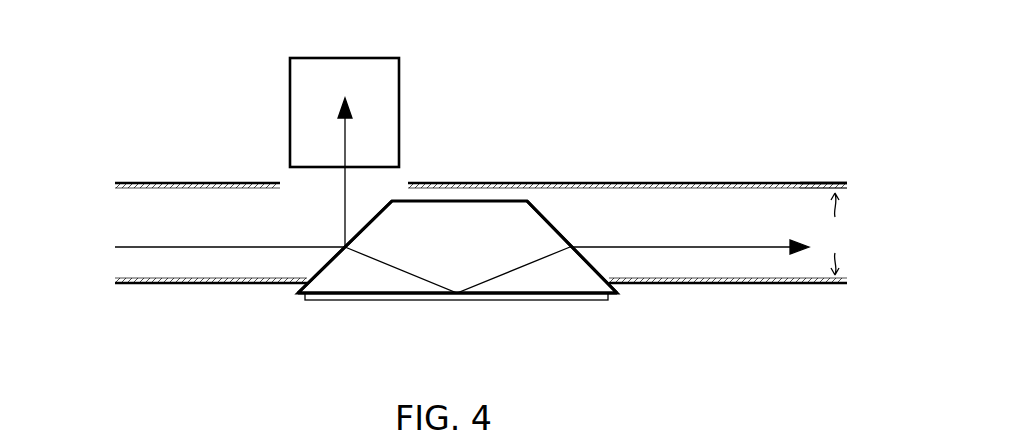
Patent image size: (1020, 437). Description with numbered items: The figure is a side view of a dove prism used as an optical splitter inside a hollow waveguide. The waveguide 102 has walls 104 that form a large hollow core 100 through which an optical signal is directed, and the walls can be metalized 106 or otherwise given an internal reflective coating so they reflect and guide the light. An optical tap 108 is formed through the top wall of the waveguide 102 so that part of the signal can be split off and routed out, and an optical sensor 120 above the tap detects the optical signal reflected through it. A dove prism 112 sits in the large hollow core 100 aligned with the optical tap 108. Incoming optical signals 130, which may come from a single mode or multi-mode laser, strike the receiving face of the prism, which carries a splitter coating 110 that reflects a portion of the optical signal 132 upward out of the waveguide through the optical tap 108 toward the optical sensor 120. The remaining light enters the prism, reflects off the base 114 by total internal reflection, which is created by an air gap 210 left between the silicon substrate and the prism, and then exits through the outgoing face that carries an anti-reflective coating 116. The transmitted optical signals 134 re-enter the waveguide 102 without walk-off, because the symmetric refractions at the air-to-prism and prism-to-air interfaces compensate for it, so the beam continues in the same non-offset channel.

The large hollow core 100 is at (840, 234).
The waveguide 102 is at (655, 179).
The walls 104 is at (842, 182).
The metalized walls 106 is at (850, 185).
The optical tap 108 is at (279, 183).
The splitter coating 110 is at (318, 268).
The dove prism 112 is at (398, 213).
The base 114 is at (385, 295).
The anti-reflective coating 116 is at (549, 223).
The optical sensor 120 is at (340, 58).
The optical signals 130 is at (143, 245).
The reflected portion of the optical signal 132 is at (343, 218).
The transmitted optical signals 134 is at (778, 245).
The air gap 210 is at (507, 302).